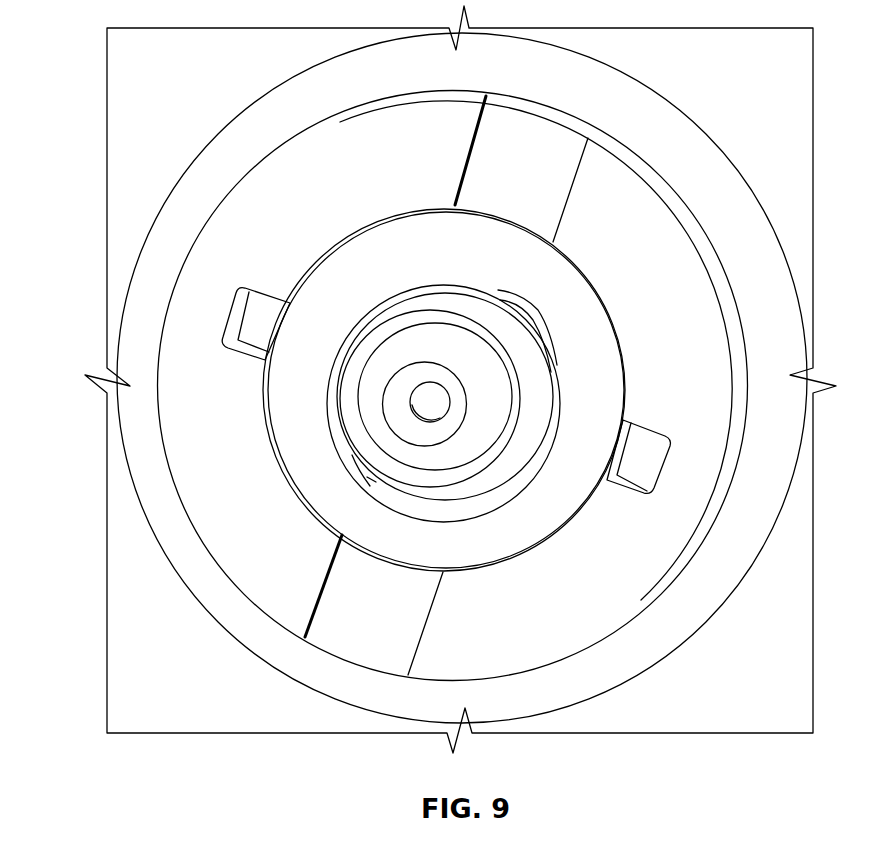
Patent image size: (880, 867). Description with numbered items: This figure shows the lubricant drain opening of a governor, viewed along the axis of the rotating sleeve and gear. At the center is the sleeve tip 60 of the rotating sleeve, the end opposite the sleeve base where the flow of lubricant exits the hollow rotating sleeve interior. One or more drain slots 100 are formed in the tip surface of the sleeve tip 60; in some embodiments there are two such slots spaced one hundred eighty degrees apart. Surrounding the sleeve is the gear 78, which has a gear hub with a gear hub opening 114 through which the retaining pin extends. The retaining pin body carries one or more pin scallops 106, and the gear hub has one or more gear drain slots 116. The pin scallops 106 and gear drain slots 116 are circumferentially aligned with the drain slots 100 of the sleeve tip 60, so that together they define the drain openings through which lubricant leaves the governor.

The gear 78 is at (122, 70).
The sleeve tip 60 is at (298, 413).
The drain slots 100 is at (468, 253).
The pin scallops 106 is at (540, 308).
The gear hub opening 114 is at (497, 503).
The gear drain slots 116 is at (520, 225).